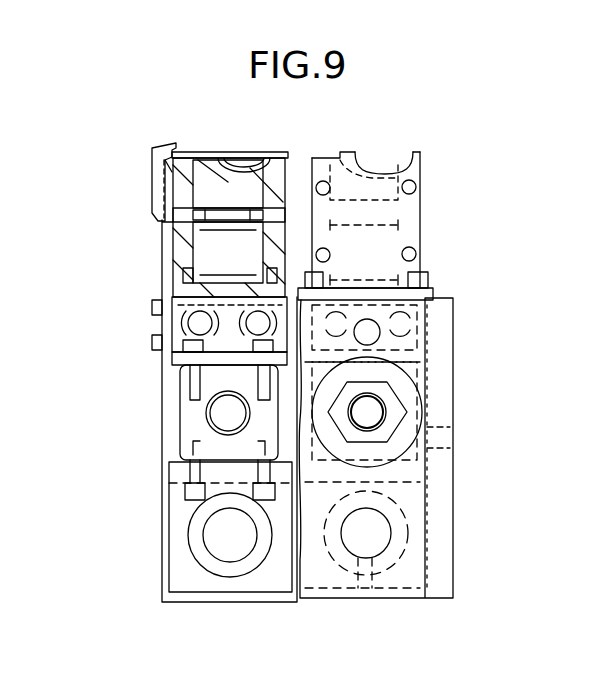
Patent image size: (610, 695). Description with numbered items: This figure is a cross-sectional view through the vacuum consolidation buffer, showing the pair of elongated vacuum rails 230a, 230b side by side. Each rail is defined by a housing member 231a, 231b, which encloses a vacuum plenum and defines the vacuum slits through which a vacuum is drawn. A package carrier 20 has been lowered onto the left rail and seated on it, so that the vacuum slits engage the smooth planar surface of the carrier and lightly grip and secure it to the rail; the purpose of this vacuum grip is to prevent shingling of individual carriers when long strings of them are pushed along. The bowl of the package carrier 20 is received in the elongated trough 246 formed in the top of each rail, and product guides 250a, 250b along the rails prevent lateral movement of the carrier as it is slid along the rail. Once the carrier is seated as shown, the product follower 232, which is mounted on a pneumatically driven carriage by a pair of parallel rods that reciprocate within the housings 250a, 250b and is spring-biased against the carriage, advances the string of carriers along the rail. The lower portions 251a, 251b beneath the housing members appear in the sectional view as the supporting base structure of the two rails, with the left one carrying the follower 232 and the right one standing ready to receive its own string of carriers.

The package carrier 20 is at (210, 152).
The vacuum rail 230a is at (203, 187).
The vacuum rail 230b is at (418, 183).
The product follower 232 is at (160, 147).
The elongated trough 246 is at (397, 160).
The product guide 250a is at (283, 163).
The product guide 250b is at (422, 162).
The housing member 231a is at (183, 241).
The housing member 231b is at (398, 240).
The first base body 251a is at (207, 535).
The second base body 251b is at (383, 538).